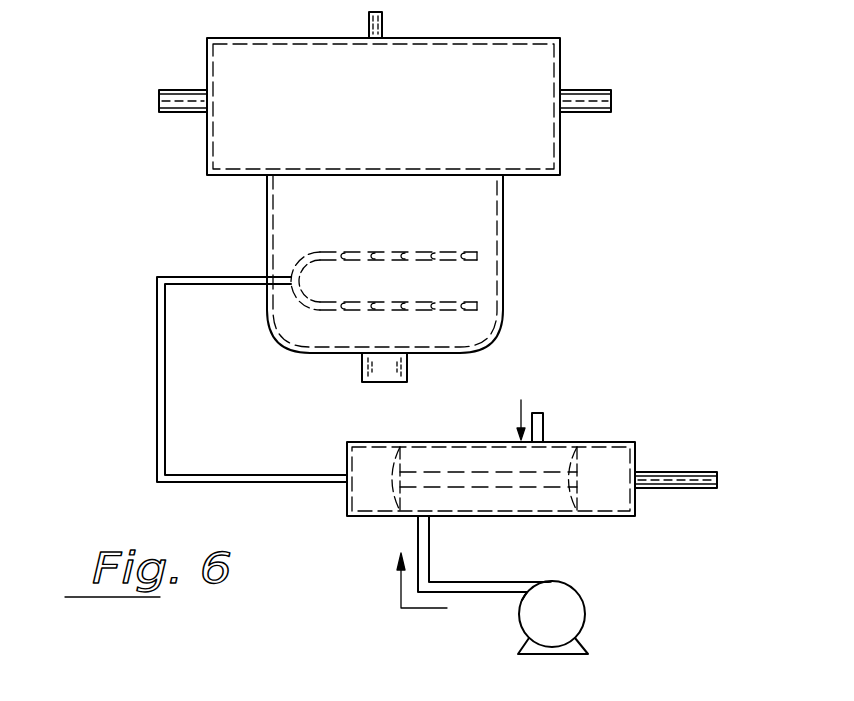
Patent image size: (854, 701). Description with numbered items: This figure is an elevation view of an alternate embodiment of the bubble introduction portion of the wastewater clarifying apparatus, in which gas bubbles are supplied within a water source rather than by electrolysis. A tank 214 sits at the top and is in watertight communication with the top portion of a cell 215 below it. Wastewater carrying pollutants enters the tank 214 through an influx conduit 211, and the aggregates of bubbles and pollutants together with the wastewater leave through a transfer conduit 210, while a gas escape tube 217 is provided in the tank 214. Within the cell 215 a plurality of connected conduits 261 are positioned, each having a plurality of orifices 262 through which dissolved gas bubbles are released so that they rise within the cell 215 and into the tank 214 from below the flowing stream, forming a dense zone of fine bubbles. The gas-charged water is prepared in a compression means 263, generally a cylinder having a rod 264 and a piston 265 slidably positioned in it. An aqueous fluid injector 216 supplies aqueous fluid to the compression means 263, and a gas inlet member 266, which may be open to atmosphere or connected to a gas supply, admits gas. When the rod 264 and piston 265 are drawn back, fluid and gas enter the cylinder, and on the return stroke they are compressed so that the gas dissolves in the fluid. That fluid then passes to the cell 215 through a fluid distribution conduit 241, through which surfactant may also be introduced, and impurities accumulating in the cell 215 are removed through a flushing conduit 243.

The transfer conduit 210 is at (597, 114).
The influx conduit 211 is at (177, 113).
The tank 214 is at (561, 63).
The cell 215 is at (504, 215).
The aqueous fluid injector 216 is at (585, 607).
The gas escape tube 217 is at (382, 20).
The fluid distribution conduit 241 is at (157, 435).
The flushing conduit 243 is at (378, 383).
The connected conduits 261 is at (433, 312).
The orifices 262 is at (477, 255).
The compression means 263 is at (636, 456).
The rod 264 is at (698, 490).
The piston 265 is at (385, 488).
The gas inlet member 266 is at (544, 426).